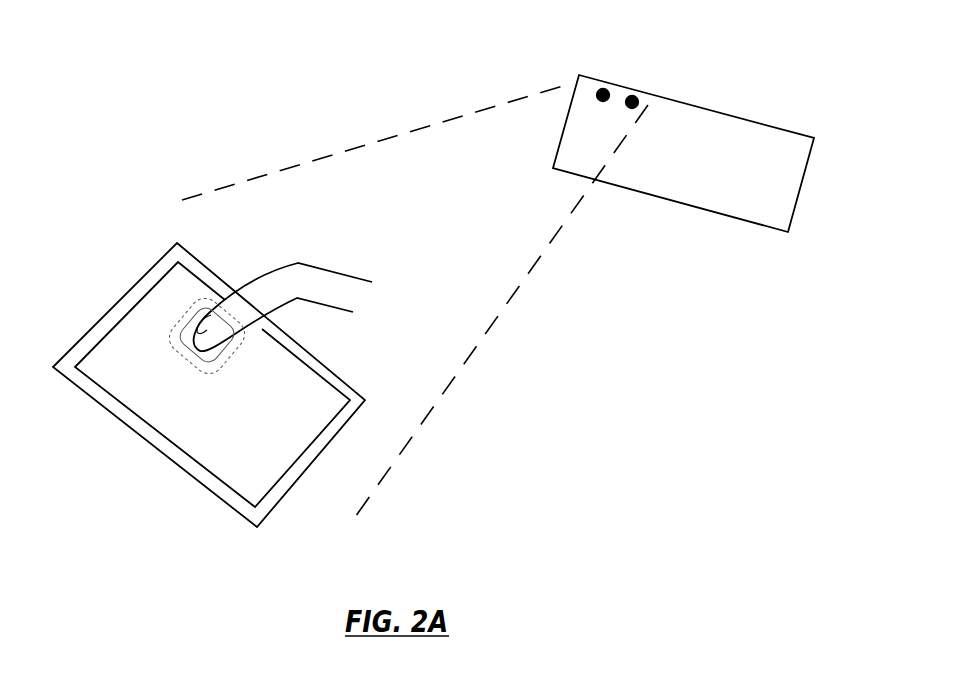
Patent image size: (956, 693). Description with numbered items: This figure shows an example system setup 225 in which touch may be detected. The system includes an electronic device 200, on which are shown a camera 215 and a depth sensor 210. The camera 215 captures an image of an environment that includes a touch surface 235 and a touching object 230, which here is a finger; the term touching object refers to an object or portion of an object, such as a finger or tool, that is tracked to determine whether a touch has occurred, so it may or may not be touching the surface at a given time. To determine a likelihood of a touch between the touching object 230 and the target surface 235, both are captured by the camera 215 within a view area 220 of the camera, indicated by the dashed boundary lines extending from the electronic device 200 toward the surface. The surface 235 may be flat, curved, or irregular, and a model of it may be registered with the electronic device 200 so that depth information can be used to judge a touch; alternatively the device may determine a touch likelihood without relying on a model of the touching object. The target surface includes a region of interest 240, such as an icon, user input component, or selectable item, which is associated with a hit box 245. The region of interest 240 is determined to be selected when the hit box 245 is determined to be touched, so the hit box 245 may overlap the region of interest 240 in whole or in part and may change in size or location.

The electronic device 200 is at (803, 195).
The depth sensor 210 is at (607, 88).
The camera 215 is at (639, 99).
The view area 220 is at (418, 129).
The system setup 225 is at (285, 95).
The touching object 230 is at (320, 268).
The touch surface 235 is at (115, 325).
The region of interest 240 is at (183, 345).
The hit box 245 is at (203, 379).